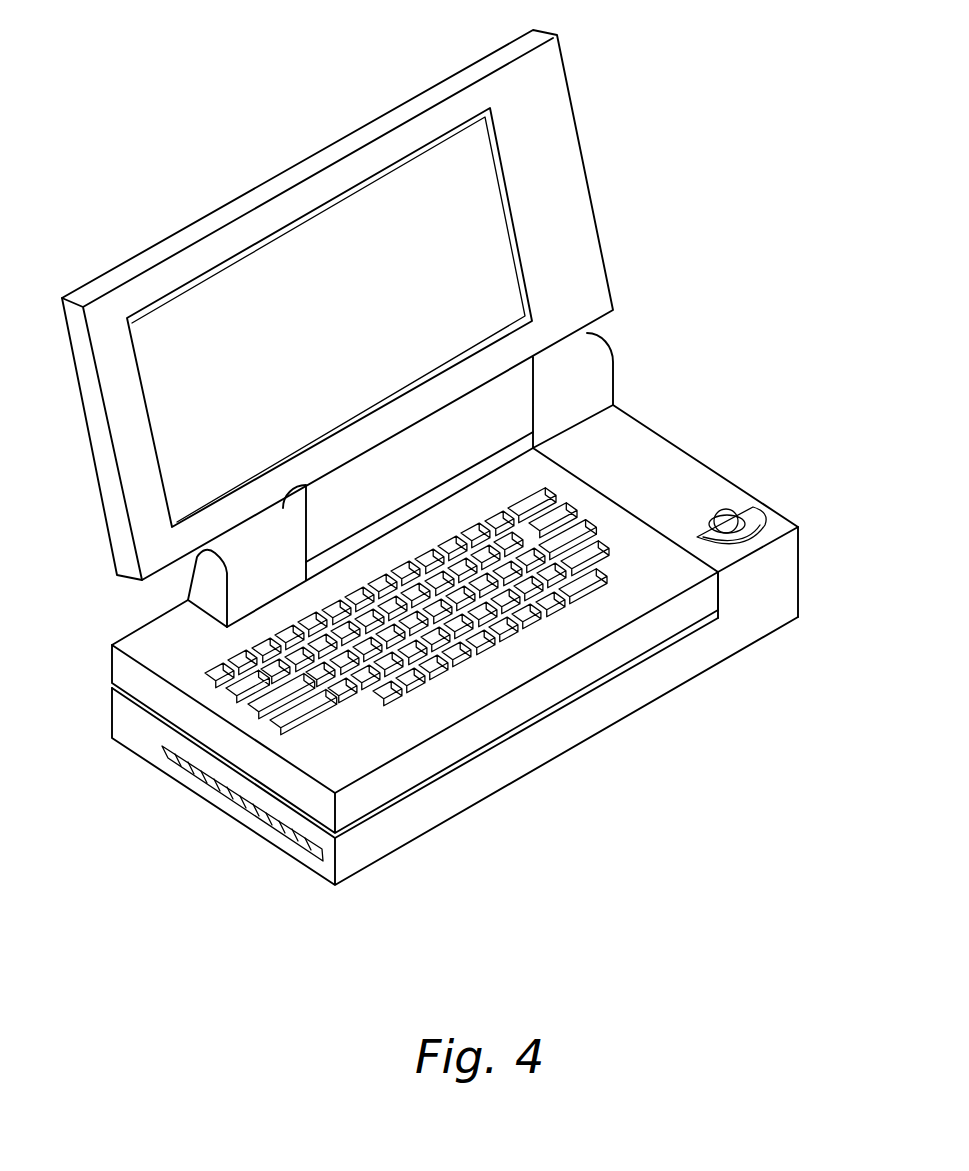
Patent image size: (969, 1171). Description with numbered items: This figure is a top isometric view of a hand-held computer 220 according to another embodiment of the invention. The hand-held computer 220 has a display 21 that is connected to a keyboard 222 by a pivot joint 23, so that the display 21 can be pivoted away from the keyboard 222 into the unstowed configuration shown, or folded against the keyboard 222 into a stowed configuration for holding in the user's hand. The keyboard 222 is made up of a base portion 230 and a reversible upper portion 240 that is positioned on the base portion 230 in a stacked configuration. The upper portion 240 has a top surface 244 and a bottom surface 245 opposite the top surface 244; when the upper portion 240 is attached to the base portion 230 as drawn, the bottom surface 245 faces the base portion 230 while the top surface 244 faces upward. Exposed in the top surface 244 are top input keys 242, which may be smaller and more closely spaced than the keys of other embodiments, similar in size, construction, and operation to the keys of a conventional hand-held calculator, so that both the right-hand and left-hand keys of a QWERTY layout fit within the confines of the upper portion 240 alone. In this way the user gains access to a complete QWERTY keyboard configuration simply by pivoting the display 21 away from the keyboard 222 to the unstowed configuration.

The display 21 is at (572, 99).
The pivot joint 23 is at (624, 347).
The hand-held computer 220 is at (753, 409).
The keyboard 222 is at (757, 694).
The base portion 230 is at (798, 556).
The upper portion 240 is at (112, 662).
The top input keys 242 is at (578, 505).
The top surface 244 is at (320, 763).
The bottom surface 245 is at (388, 800).